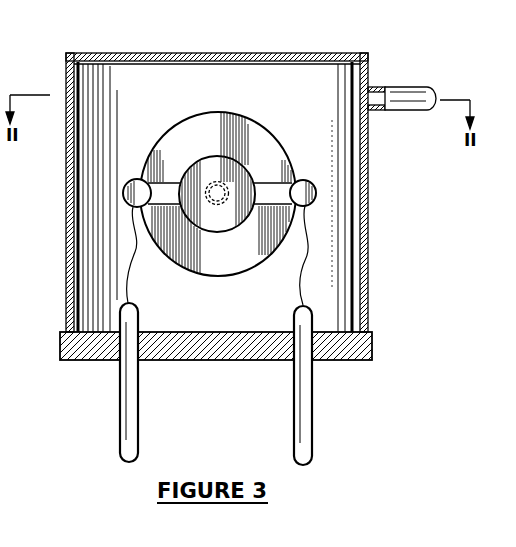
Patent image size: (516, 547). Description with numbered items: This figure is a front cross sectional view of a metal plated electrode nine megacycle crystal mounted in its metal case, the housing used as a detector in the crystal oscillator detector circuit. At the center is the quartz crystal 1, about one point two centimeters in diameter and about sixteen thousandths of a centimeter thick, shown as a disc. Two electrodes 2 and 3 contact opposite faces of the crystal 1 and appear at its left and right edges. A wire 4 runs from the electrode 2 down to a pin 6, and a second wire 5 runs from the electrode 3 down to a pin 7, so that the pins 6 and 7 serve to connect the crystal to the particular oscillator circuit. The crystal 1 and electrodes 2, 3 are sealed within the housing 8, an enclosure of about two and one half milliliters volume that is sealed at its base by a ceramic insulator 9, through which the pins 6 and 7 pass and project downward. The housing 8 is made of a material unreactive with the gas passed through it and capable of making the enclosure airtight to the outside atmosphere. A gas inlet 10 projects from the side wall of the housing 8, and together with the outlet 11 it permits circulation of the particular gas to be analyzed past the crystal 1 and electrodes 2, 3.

The crystal 1 is at (250, 118).
The electrode 2 is at (136, 180).
The electrode 3 is at (302, 181).
The wire 4 is at (131, 273).
The wire 5 is at (306, 265).
The pin 6 is at (139, 411).
The pin 7 is at (313, 412).
The housing 8 is at (295, 53).
The ceramic insulator 9 is at (236, 350).
The gas inlet 10 is at (412, 106).
The outlet 11 is at (208, 188).